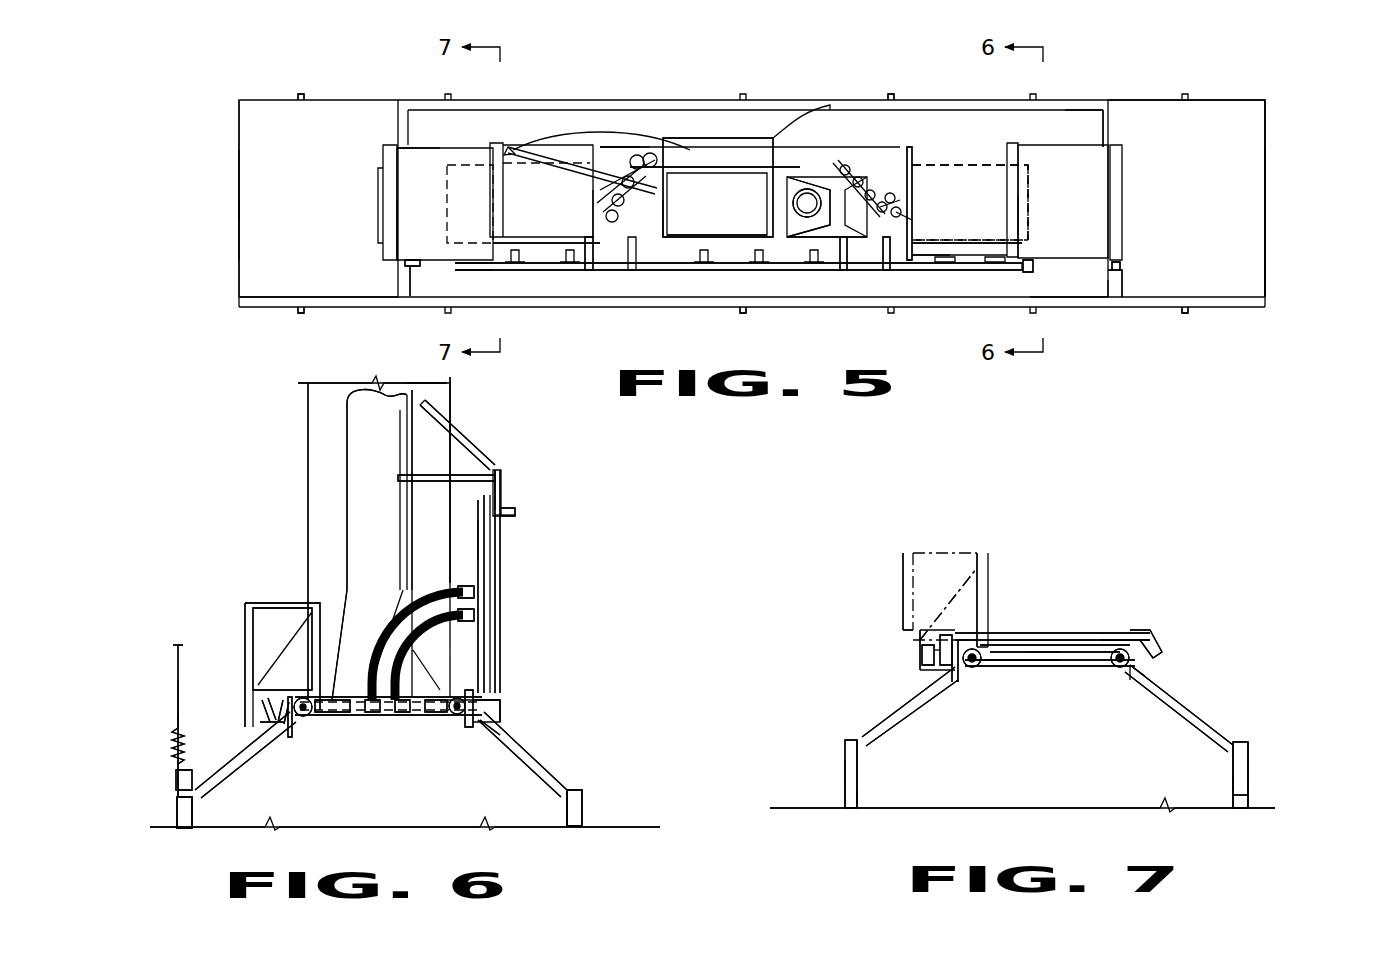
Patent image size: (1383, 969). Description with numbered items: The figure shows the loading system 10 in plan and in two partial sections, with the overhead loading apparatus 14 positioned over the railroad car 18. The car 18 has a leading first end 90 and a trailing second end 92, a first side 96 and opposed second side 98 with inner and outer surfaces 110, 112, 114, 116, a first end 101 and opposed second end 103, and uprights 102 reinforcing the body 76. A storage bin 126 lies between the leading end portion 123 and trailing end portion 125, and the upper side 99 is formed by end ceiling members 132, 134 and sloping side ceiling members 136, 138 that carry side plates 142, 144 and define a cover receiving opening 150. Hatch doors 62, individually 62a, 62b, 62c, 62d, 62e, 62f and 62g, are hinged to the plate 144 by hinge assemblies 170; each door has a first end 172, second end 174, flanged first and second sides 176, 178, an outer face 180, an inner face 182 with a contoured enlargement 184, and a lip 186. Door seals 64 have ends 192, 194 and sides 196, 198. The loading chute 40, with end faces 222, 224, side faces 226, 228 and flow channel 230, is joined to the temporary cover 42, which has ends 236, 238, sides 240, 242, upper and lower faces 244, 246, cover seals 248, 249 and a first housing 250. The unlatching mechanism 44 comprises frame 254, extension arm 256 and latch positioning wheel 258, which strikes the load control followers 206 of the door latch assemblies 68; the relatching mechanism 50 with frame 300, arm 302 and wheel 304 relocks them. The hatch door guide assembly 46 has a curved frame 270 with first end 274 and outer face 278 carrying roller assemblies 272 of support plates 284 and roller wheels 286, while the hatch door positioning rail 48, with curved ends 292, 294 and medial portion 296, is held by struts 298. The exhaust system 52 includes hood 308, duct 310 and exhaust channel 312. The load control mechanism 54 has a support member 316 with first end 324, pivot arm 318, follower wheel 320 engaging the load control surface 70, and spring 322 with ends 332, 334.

In FIG. 5, the loading system 10 is at (1300, 92).
In FIG. 5, the overhead loading apparatus 14 is at (636, 135).
In FIG. 6, the overhead loading apparatus 14 is at (243, 470).
In FIG. 5, the railroad car 18 is at (1290, 243).
In FIG. 6, the railroad car 18 is at (542, 758).
In FIG. 7, the railroad car 18 is at (1195, 702).
In FIG. 5, the loading chute 40 is at (688, 165).
In FIG. 6, the loading chute 40 is at (412, 385).
In FIG. 5, the temporary cover 42 is at (646, 215).
In FIG. 6, the temporary cover 42 is at (345, 720).
In FIG. 7, the temporary cover 42 is at (1032, 690).
In FIG. 5, the unlatching mechanism 44 is at (948, 278).
In FIG. 6, the unlatching mechanism 44 is at (242, 608).
In FIG. 5, the hatch door guide assembly 46 is at (910, 150).
In FIG. 6, the hatch door guide assembly 46 is at (428, 588).
In FIG. 5, the hatch door positioning rail 48 is at (618, 130).
In FIG. 6, the hatch door positioning rail 48 is at (512, 506).
In FIG. 5, the relatching mechanism 50 is at (542, 275).
In FIG. 7, the relatching mechanism 50 is at (985, 548).
In FIG. 5, the exhaust system 52 is at (806, 272).
In FIG. 6, the exhaust system 52 is at (342, 405).
In FIG. 6, the load control mechanism 54 is at (175, 668).
In FIG. 6, the hatch doors 62 is at (470, 610).
In FIG. 7, the hatch doors 62 is at (998, 630).
In FIG. 5, the first hatch door 62a is at (405, 171).
In FIG. 5, the hatch door 62b is at (560, 201).
In FIG. 5, the hatch door 62c is at (612, 140).
In FIG. 5, the hatch door 62d is at (752, 148).
In FIG. 5, the hatch door 62e is at (895, 148).
In FIG. 5, the hatch door 62f is at (997, 197).
In FIG. 5, the seventh conveyor section 62g is at (1100, 183).
In FIG. 5, the door seals 64 is at (390, 145).
In FIG. 6, the door seals 64 is at (497, 640).
In FIG. 7, the door seals 64 is at (1013, 638).
In FIG. 5, the door latch assemblies 68 is at (418, 290).
In FIG. 6, the door latch assemblies 68 is at (275, 692).
In FIG. 7, the door latch assemblies 68 is at (922, 660).
In FIG. 5, the load control surface 70 is at (1118, 284).
In FIG. 6, the load control surface 70 is at (178, 797).
In FIG. 7, the load control surface 70 is at (848, 745).
In FIG. 5, the body 76 is at (1216, 307).
In FIG. 7, the body 76 is at (1250, 750).
In FIG. 5, the leading first end 90 is at (236, 190).
In FIG. 5, the trailing second end 92 is at (1272, 186).
In FIG. 5, the first side 96 is at (290, 312).
In FIG. 6, the first side 96 is at (194, 815).
In FIG. 7, the first side 96 is at (859, 778).
In FIG. 5, the opposed second side 98 is at (300, 94).
In FIG. 6, the opposed second side 98 is at (568, 808).
In FIG. 7, the opposed second side 98 is at (1231, 767).
In FIG. 5, the upper side 99 is at (1090, 126).
In FIG. 5, the first end 101 is at (237, 222).
In FIG. 5, the uprights 102 is at (890, 94).
In FIG. 6, the uprights 102 is at (180, 820).
In FIG. 7, the uprights 102 is at (848, 777).
In FIG. 5, the opposed second end 103 is at (1268, 278).
In FIG. 7, the inner surface 110 is at (860, 796).
In FIG. 7, the outer surface 112 is at (846, 795).
In FIG. 7, the inner surface 114 is at (1232, 784).
In FIG. 7, the outer surface 116 is at (1250, 797).
In FIG. 5, the leading end portion 123 is at (275, 252).
In FIG. 5, the trailing end portion 125 is at (1085, 280).
In FIG. 6, the storage bin 126 is at (372, 800).
In FIG. 7, the storage bin 126 is at (1065, 790).
In FIG. 5, the first end ceiling member 132 is at (237, 130).
In FIG. 5, the second end ceiling member 134 is at (1245, 148).
In FIG. 5, the first side ceiling member 136 is at (1063, 282).
In FIG. 6, the first side ceiling member 136 is at (236, 766).
In FIG. 7, the first side ceiling member 136 is at (880, 730).
In FIG. 5, the second side ceiling member 138 is at (1072, 120).
In FIG. 6, the second side ceiling member 138 is at (495, 750).
In FIG. 7, the second side ceiling member 138 is at (1215, 726).
In FIG. 6, the first side plate 142 is at (286, 735).
In FIG. 7, the first side plate 142 is at (958, 684).
In FIG. 6, the second side plate 144 is at (484, 722).
In FIG. 7, the second side plate 144 is at (1122, 682).
In FIG. 6, the cover receiving opening 150 is at (398, 730).
In FIG. 7, the cover receiving opening 150 is at (997, 682).
In FIG. 6, the hinge assembly 170 is at (484, 700).
In FIG. 7, the hinge assembly 170 is at (1160, 655).
In FIG. 5, the first end 172 is at (905, 250).
In FIG. 5, the opposed second end 174 is at (597, 215).
In FIG. 5, the first side 176 is at (438, 262).
In FIG. 6, the first side 176 is at (482, 490).
In FIG. 7, the first side 176 is at (920, 652).
In FIG. 5, the second side 178 is at (440, 146).
In FIG. 6, the second side 178 is at (496, 708).
In FIG. 7, the second side 178 is at (1152, 640).
In FIG. 5, the outer face 180 is at (418, 216).
In FIG. 6, the outer face 180 is at (485, 548).
In FIG. 7, the outer face 180 is at (1040, 640).
In FIG. 6, the inner face 182 is at (474, 680).
In FIG. 7, the inner face 182 is at (1052, 645).
In FIG. 6, the contoured enlargement 184 is at (470, 540).
In FIG. 7, the contoured enlargement 184 is at (1072, 648).
In FIG. 6, the lip 186 is at (470, 493).
In FIG. 7, the lip 186 is at (935, 668).
In FIG. 5, the first end 192 is at (1028, 272).
In FIG. 6, the first end 192 is at (496, 470).
In FIG. 7, the first end 192 is at (942, 635).
In FIG. 5, the opposed second end 194 is at (1013, 145).
In FIG. 6, the opposed second end 194 is at (497, 715).
In FIG. 7, the opposed second end 194 is at (1158, 650).
In FIG. 5, the first side 196 is at (1010, 208).
In FIG. 5, the opposed second side 198 is at (1015, 230).
In FIG. 6, the opposed second side 198 is at (488, 560).
In FIG. 7, the opposed second side 198 is at (1130, 638).
In FIG. 7, the load control follower 206 is at (905, 670).
In FIG. 5, the first end face 222 is at (660, 240).
In FIG. 5, the second end face 224 is at (775, 209).
In FIG. 6, the second end face 224 is at (322, 415).
In FIG. 5, the first side face 226 is at (706, 240).
In FIG. 6, the first side face 226 is at (306, 398).
In FIG. 5, the opposed second side face 228 is at (708, 178).
In FIG. 6, the opposed second side face 228 is at (452, 388).
In FIG. 5, the material flow channel 230 is at (762, 148).
In FIG. 5, the first end 236 is at (1030, 180).
In FIG. 5, the opposed second end 238 is at (445, 204).
In FIG. 5, the first side 240 is at (1030, 250).
In FIG. 6, the first side 240 is at (300, 730).
In FIG. 7, the first side 240 is at (945, 676).
In FIG. 5, the opposed second side 242 is at (955, 152).
In FIG. 6, the opposed second side 242 is at (452, 720).
In FIG. 7, the opposed second side 242 is at (1140, 666).
In FIG. 7, the upper face 244 is at (1040, 652).
In FIG. 7, the lower face 246 is at (1133, 630).
In FIG. 6, the first cover seal 248 is at (298, 726).
In FIG. 7, the first cover seal 248 is at (975, 670).
In FIG. 6, the second cover seal 249 is at (462, 718).
In FIG. 7, the second cover seal 249 is at (1115, 668).
In FIG. 6, the first housing 250 is at (440, 716).
In FIG. 5, the braced supportive frame 254 is at (890, 262).
In FIG. 6, the braced supportive frame 254 is at (262, 605).
In FIG. 5, the extension arm 256 is at (962, 278).
In FIG. 6, the extension arm 256 is at (258, 718).
In FIG. 6, the latch positioning wheel 258 is at (260, 724).
In FIG. 5, the supportive frame 270 is at (826, 201).
In FIG. 6, the supportive frame 270 is at (440, 638).
In FIG. 5, the roller assemblies 272 is at (900, 197).
In FIG. 6, the roller assemblies 272 is at (395, 622).
In FIG. 5, the first end 274 is at (905, 218).
In FIG. 5, the outer face 278 is at (858, 162).
In FIG. 6, the outer face 278 is at (385, 722).
In FIG. 6, the support plates 284 is at (324, 718).
In FIG. 5, the roller wheels 286 is at (838, 160).
In FIG. 6, the roller wheels 286 is at (472, 615).
In FIG. 5, the outwardly curved first end 292 is at (812, 106).
In FIG. 6, the outwardly curved first end 292 is at (518, 516).
In FIG. 5, the inwardly curved second end 294 is at (510, 145).
In FIG. 5, the medial portion 296 is at (645, 122).
In FIG. 5, the rigid strut members 298 is at (658, 130).
In FIG. 6, the rigid strut members 298 is at (440, 478).
In FIG. 5, the braced frame 300 is at (590, 250).
In FIG. 7, the braced frame 300 is at (930, 548).
In FIG. 5, the extension arm 302 is at (557, 276).
In FIG. 7, the extension arm 302 is at (910, 636).
In FIG. 5, the latch positioning wheel 304 is at (452, 262).
In FIG. 7, the latch positioning wheel 304 is at (928, 640).
In FIG. 5, the hood 308 is at (782, 238).
In FIG. 6, the hood 308 is at (335, 650).
In FIG. 5, the exhaust duct 310 is at (790, 217).
In FIG. 6, the exhaust duct 310 is at (360, 428).
In FIG. 5, the exhaust channel 312 is at (800, 201).
In FIG. 6, the exhaust channel 312 is at (362, 398).
In FIG. 6, the support member 316 is at (176, 685).
In FIG. 6, the pivot arm 318 is at (174, 782).
In FIG. 6, the follower wheel 320 is at (177, 810).
In FIG. 6, the spring 322 is at (172, 738).
In FIG. 6, the first end 324 is at (176, 648).
In FIG. 6, the first end 332 is at (176, 722).
In FIG. 6, the second end 334 is at (175, 774).